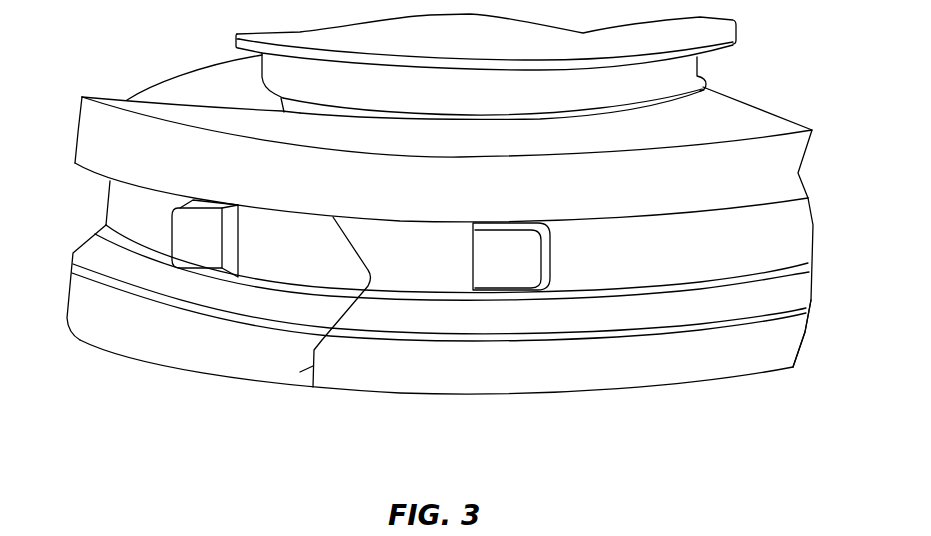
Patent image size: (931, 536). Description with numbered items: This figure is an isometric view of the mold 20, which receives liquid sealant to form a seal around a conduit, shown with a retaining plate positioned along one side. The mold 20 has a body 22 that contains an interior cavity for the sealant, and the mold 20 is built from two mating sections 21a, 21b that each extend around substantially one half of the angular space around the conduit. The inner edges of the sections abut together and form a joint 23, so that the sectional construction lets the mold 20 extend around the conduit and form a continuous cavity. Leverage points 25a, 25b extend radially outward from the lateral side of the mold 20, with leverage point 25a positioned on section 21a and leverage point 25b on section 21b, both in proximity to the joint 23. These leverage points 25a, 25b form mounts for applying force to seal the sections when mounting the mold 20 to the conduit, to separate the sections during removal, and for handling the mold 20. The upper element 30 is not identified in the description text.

The mold 20 is at (461, 225).
The upper ring 30 is at (732, 117).
The body 22 is at (446, 303).
The section 21a is at (97, 252).
The section 21b is at (777, 345).
The joint 23 is at (310, 368).
The leverage point 25a is at (205, 238).
The leverage point 25b is at (508, 265).